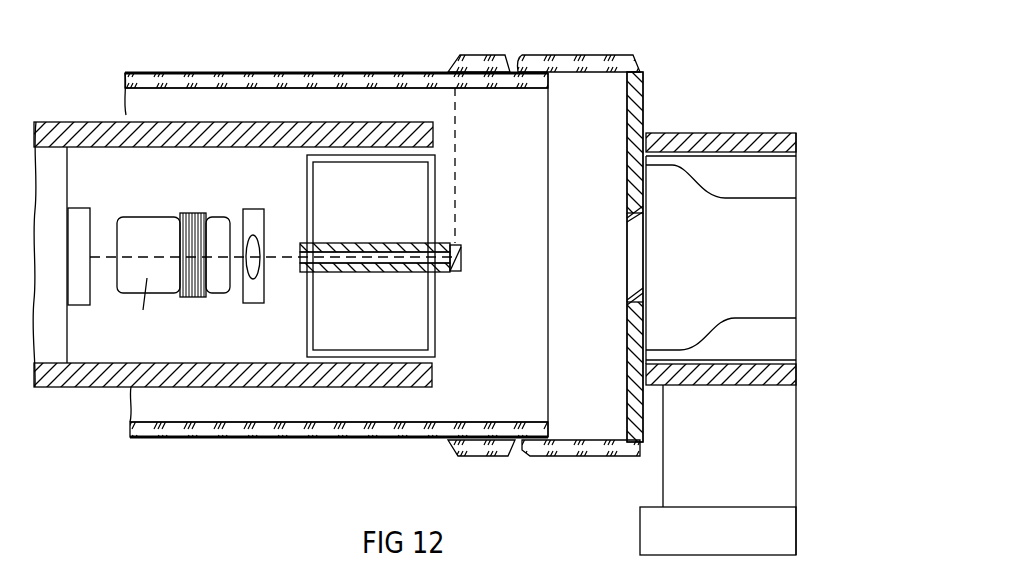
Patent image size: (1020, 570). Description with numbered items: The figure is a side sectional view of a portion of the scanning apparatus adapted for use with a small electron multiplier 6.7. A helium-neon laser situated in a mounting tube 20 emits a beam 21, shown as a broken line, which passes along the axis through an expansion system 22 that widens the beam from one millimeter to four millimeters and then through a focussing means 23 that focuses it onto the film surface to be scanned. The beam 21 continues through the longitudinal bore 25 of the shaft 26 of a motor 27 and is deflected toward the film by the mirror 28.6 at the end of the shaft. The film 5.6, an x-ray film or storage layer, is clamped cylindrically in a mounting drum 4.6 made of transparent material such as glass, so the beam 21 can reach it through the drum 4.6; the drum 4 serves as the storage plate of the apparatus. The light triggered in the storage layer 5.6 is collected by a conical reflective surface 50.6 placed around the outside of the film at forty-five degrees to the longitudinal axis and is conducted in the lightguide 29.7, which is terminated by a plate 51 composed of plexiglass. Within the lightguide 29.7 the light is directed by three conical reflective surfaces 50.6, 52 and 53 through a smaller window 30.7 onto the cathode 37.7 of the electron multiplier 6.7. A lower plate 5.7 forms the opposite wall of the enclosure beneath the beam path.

The drum 4 is at (468, 422).
The mounting drum 4.6 is at (378, 73).
The film 5.6 is at (318, 73).
The lower shielding plate 5.7 is at (388, 438).
The electron multiplier 6.7 is at (712, 187).
The mounting tube 20 is at (90, 380).
The beam 21 is at (458, 153).
The expansion system 22 is at (152, 228).
The focussing means 23 is at (253, 210).
The longitudinal bore 25 is at (350, 268).
The shaft 26 is at (385, 243).
The motor 27 is at (418, 328).
The rotating mirror 28.6 is at (462, 258).
The lightguide 29.7 is at (540, 70).
The window 30.7 is at (635, 277).
The cathode 37.7 is at (641, 262).
The reflective surface 50.6 is at (455, 70).
The plate 51 is at (632, 150).
The conical reflective surface 52 is at (640, 70).
The conical reflective surface 53 is at (630, 217).